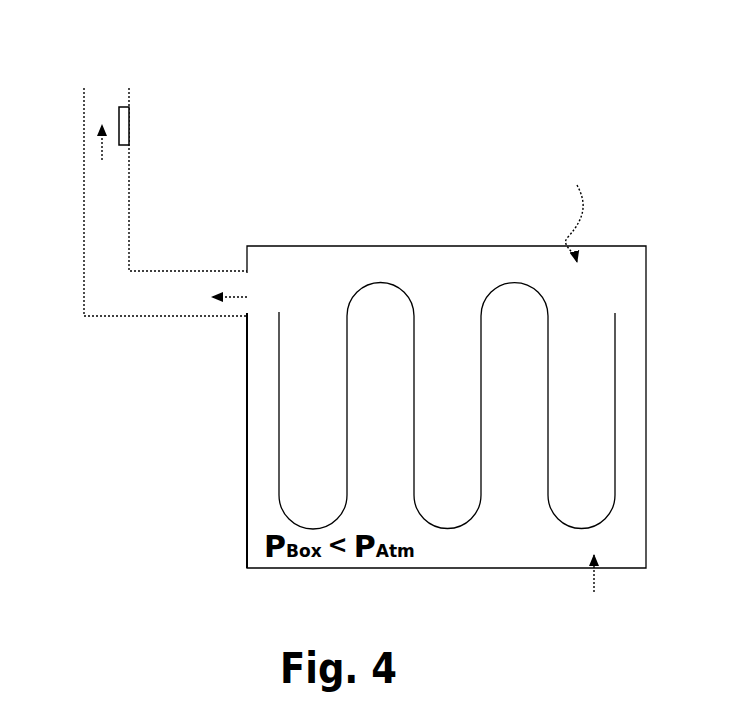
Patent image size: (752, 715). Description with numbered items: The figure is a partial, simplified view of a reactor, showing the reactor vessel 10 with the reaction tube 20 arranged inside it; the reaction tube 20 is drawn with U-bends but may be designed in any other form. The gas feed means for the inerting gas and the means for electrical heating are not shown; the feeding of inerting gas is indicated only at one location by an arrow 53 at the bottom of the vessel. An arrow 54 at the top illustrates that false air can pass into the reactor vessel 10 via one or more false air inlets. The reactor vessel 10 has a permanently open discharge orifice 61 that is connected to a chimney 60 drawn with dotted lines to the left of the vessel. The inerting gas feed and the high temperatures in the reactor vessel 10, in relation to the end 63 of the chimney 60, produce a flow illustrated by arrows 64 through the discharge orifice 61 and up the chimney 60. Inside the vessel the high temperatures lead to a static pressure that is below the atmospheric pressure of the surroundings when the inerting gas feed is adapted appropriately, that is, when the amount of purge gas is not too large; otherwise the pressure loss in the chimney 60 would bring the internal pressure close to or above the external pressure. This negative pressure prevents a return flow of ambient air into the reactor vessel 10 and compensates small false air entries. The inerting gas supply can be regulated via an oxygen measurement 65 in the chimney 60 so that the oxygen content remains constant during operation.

The reactor vessel 10 is at (647, 393).
The reaction tube 20 is at (613, 443).
The arrow 53 is at (594, 580).
The arrow 54 is at (578, 192).
The chimney 60 is at (162, 170).
The discharge orifice 61 is at (242, 317).
The end 63 is at (115, 88).
The arrows 64 is at (102, 143).
The oxygen measurement 65 is at (130, 124).